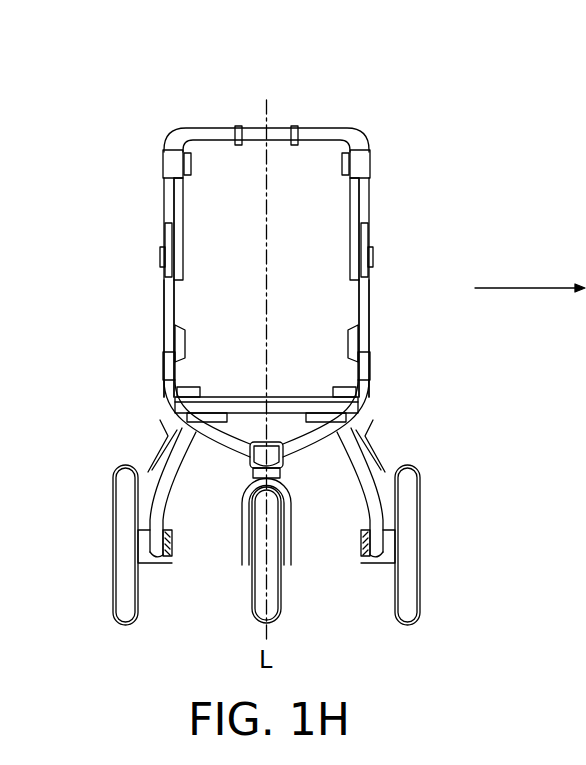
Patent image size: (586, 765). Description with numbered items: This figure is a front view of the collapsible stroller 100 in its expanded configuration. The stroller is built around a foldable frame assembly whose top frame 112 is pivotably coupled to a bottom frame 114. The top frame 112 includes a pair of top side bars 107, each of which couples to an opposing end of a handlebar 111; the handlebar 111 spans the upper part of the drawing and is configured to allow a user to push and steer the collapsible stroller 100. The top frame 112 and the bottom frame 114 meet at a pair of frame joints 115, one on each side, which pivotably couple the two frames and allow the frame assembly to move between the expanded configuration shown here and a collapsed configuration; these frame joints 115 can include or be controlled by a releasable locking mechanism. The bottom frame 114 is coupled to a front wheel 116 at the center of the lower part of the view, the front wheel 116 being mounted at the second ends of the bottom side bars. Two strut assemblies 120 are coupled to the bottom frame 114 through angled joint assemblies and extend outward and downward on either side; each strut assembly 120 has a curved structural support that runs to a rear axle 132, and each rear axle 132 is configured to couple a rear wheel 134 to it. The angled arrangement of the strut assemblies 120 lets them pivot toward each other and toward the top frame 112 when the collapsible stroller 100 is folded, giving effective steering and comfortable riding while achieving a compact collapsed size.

The collapsible stroller 100 is at (395, 93).
The handlebar 111 is at (328, 138).
The top frame 112 is at (383, 214).
The top side bars 107 is at (170, 292).
The frame joints 115 is at (152, 335).
The bottom frame 114 is at (350, 417).
The strut assemblies 120 is at (195, 481).
The rear axle 132 is at (178, 565).
The rear wheel 134 is at (123, 613).
The front wheel 116 is at (273, 603).